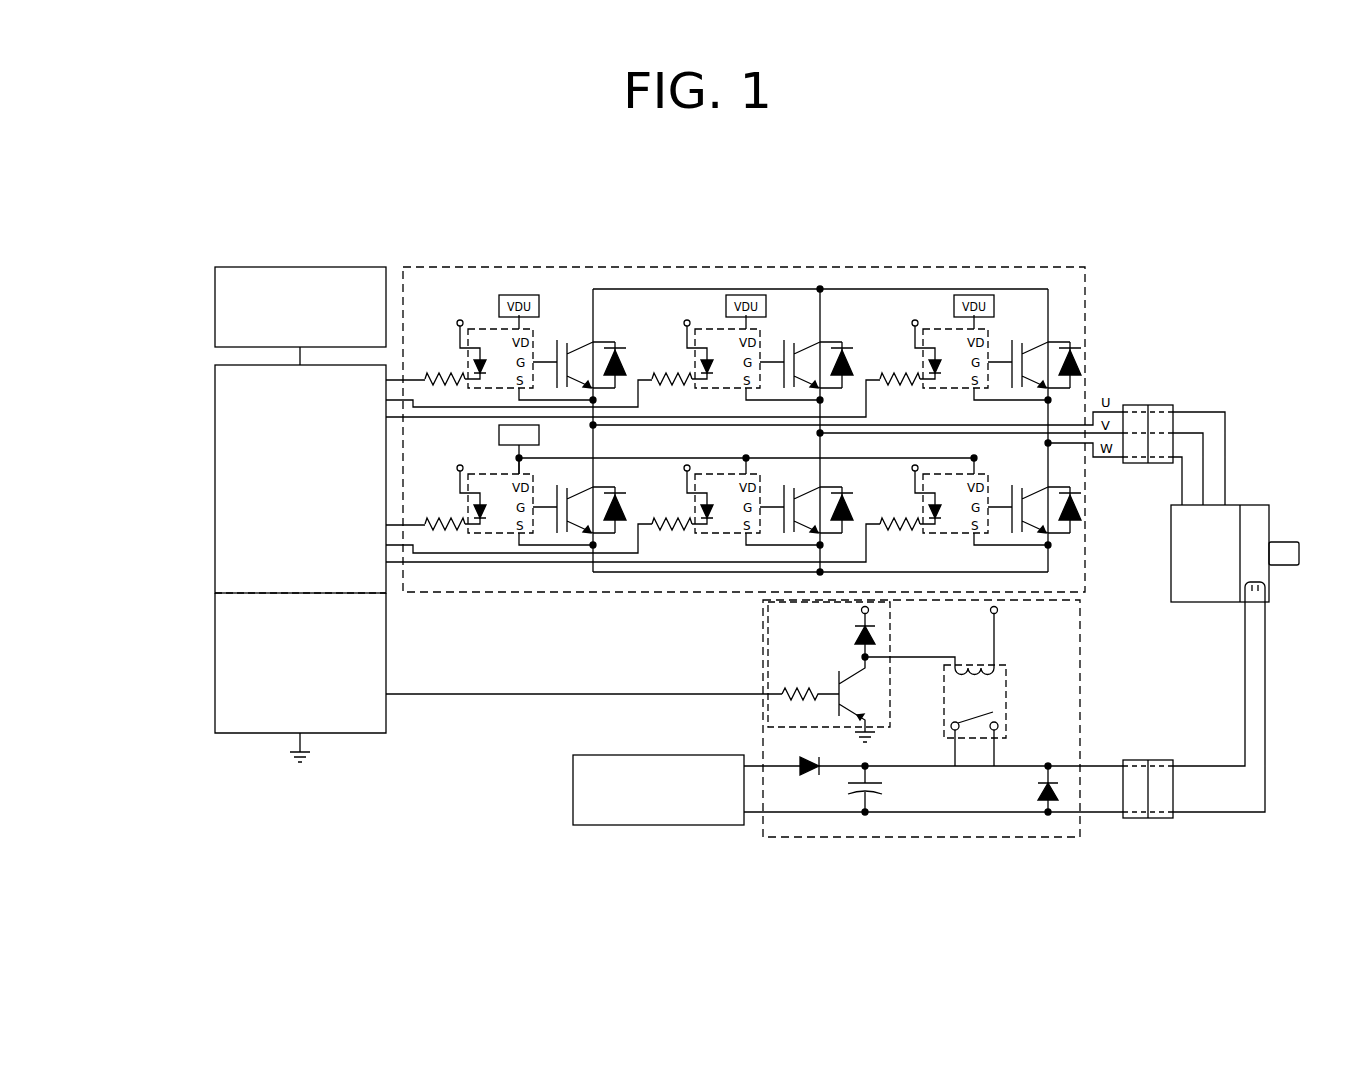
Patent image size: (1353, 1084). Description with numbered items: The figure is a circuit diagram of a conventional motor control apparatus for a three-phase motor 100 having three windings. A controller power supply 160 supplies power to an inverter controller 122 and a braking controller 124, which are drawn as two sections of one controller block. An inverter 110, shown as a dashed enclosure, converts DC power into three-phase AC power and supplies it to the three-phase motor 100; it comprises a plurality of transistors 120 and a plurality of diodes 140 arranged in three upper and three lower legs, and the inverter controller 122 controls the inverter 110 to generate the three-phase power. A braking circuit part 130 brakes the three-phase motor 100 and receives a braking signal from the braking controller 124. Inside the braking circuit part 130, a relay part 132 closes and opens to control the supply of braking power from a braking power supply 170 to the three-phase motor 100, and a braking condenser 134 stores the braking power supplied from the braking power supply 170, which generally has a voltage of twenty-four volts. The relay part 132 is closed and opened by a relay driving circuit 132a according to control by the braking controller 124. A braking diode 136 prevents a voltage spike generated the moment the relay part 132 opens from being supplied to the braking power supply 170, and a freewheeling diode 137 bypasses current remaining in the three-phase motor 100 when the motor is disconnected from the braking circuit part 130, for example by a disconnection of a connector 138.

The three-phase motor 100 is at (1258, 505).
The inverter 110 is at (726, 267).
The transistors 120 is at (559, 340).
The inverter controller 122 is at (212, 475).
The braking controller 124 is at (212, 670).
The braking circuit part 130 is at (960, 838).
The relay part 132 is at (1006, 690).
The relay driving circuit 132a is at (890, 628).
The braking condenser 134 is at (877, 795).
The braking diode 136 is at (810, 776).
The freewheeling diode 137 is at (1040, 800).
The connector 138 is at (1163, 818).
The diodes 140 is at (617, 353).
The controller power supply 160 is at (212, 305).
The braking power supply 170 is at (672, 825).